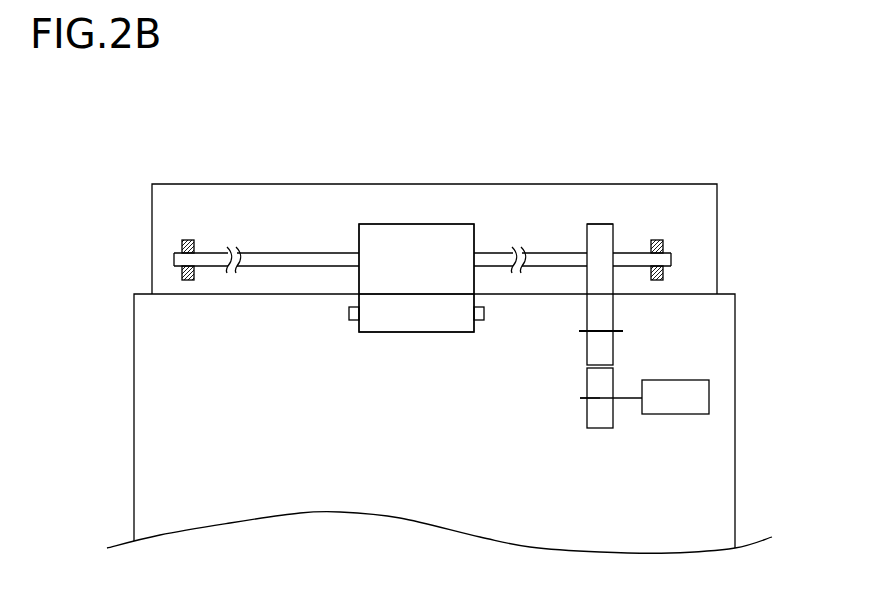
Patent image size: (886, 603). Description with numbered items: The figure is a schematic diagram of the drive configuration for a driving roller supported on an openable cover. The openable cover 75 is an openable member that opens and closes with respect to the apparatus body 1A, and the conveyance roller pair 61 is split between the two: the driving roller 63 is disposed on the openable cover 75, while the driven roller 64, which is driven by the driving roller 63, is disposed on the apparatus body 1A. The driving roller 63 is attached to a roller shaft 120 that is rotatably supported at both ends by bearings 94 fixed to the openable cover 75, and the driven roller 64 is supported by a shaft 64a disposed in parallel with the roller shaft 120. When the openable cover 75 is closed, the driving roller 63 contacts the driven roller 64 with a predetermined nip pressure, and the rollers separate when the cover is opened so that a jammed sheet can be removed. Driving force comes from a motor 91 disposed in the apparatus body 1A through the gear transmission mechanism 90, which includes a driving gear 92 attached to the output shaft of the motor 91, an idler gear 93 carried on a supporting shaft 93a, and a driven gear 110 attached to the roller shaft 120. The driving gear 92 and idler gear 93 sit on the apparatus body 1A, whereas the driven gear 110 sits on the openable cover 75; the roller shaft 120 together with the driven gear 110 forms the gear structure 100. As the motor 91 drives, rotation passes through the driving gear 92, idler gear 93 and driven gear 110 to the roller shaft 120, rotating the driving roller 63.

The apparatus body 1A is at (134, 353).
The openable cover 75 is at (271, 184).
The roller shaft 120 is at (535, 247).
The bearings 94 is at (188, 240).
The conveyance roller pair 61 is at (369, 221).
The driving roller 63 is at (418, 235).
The driven roller 64 is at (400, 321).
The shaft 64a is at (349, 315).
The driven gear 110 is at (598, 231).
The gear structure 100 is at (617, 218).
The driving gear 92 is at (601, 428).
The idler gear 93 is at (610, 323).
The supporting shaft 93a is at (580, 330).
The motor 91 is at (709, 398).
The gear transmission mechanism 90 is at (568, 399).